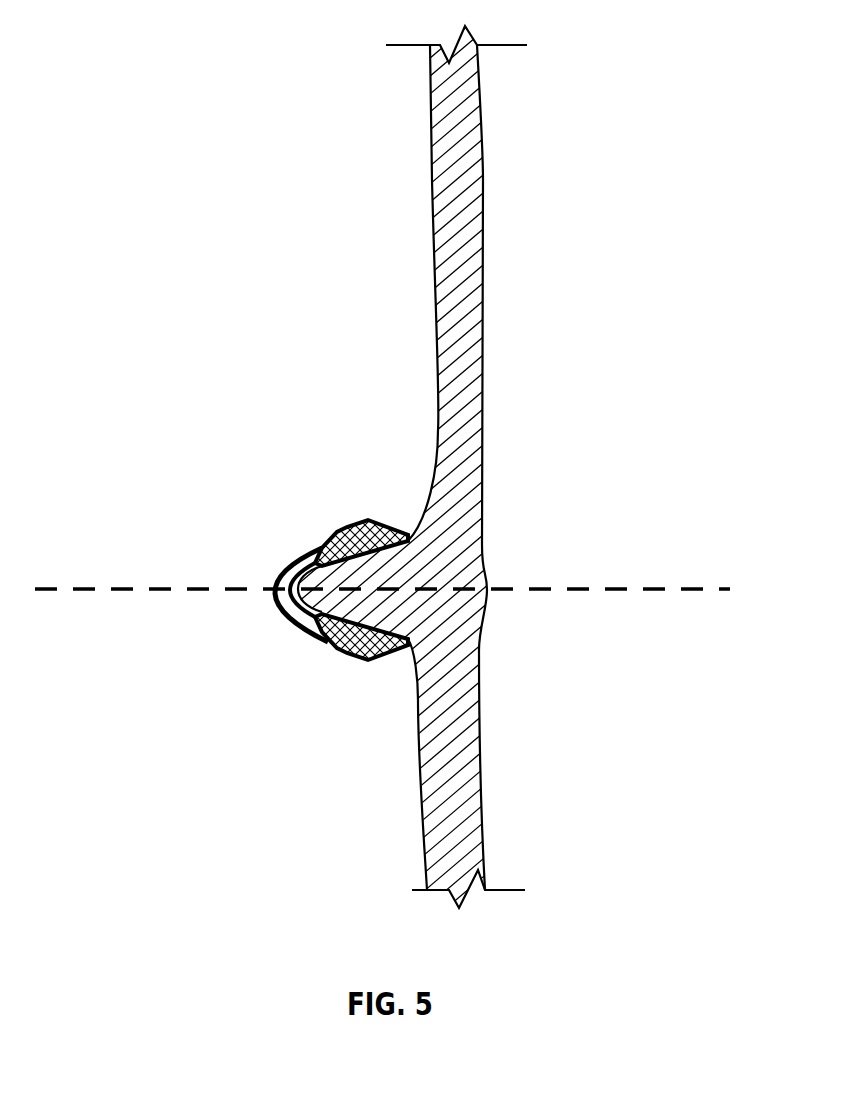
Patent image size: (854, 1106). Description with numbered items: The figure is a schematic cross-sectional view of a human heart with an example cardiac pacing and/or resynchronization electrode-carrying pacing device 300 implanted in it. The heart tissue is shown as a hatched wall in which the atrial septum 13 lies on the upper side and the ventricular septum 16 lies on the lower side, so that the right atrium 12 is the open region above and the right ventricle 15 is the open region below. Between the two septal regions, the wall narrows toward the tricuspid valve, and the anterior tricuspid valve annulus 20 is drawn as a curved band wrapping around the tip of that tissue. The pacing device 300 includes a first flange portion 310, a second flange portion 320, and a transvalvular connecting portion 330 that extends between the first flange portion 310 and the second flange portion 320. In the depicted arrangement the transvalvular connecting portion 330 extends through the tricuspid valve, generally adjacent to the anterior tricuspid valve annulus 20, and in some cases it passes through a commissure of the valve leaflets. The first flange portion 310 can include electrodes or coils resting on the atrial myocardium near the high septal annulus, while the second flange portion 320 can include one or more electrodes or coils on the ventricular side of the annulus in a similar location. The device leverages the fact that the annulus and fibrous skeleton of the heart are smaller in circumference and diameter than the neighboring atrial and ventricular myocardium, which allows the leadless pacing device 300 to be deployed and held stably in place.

The right atrium 12 is at (259, 376).
The atrial septum 13 is at (485, 268).
The right ventricle 15 is at (265, 824).
The ventricular septum 16 is at (480, 763).
The anterior tricuspid valve annulus 20 is at (281, 570).
The pacing device 300 is at (305, 571).
The first flange portion 310 is at (368, 520).
The second flange portion 320 is at (346, 663).
The transvalvular connecting portion 330 is at (281, 609).